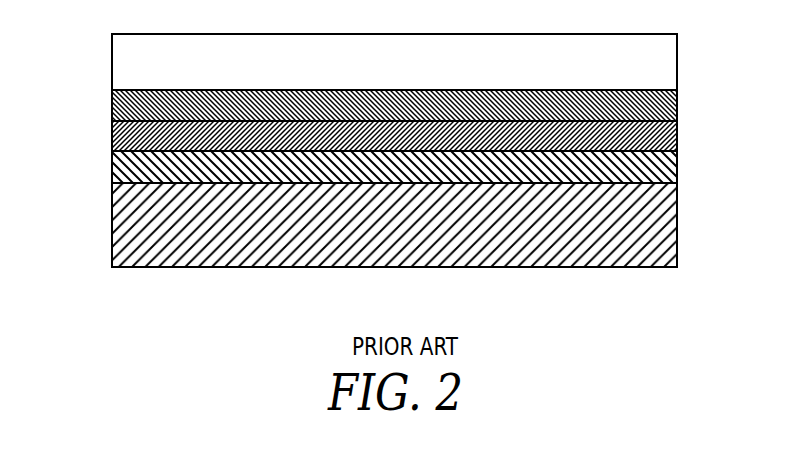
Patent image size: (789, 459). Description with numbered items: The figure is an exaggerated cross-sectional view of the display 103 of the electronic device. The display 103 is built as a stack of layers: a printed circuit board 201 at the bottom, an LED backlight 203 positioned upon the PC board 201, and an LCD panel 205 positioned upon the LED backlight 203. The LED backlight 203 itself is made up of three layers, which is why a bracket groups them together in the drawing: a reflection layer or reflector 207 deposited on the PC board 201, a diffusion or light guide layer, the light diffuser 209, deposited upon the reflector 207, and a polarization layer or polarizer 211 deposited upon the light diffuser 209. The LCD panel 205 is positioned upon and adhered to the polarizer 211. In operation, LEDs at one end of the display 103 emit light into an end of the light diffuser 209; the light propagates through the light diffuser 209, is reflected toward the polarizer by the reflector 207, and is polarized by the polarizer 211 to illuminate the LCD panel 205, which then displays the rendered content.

The display 103 is at (405, 202).
The printed circuit board 201 is at (112, 223).
The LED backlight 203 is at (405, 136).
The LCD panel 205 is at (112, 62).
The reflection layer 207 is at (112, 167).
The light diffuser 209 is at (112, 136).
The polarization layer 211 is at (112, 105).